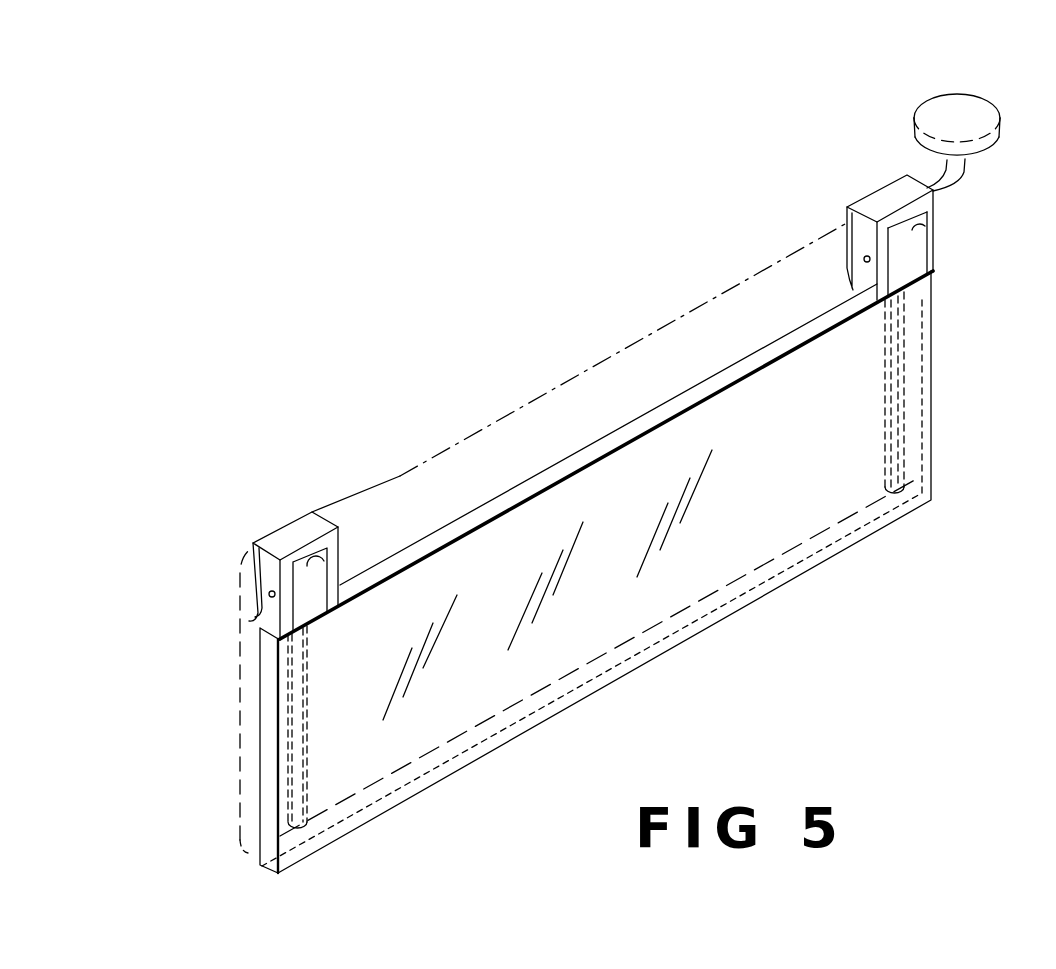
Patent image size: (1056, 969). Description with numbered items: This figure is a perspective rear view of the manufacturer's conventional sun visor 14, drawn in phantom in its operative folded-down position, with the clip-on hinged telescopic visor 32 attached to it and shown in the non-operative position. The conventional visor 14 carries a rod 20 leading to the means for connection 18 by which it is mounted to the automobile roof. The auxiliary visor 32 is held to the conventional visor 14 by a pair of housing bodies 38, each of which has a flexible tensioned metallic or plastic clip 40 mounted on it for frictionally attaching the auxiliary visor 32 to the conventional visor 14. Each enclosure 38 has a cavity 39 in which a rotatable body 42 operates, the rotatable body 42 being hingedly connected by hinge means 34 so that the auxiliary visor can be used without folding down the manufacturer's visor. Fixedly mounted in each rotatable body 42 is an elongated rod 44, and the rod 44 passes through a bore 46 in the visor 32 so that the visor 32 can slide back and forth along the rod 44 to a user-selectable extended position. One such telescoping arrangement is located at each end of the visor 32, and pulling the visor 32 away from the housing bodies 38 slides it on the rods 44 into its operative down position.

The visor 14 is at (252, 773).
The means for connection 18 is at (985, 117).
The rod 20 is at (952, 182).
The clip-on telescopic visor 32 is at (730, 570).
The hinge means 34 is at (867, 262).
The housing body 38 is at (920, 211).
The cavity 39 is at (921, 224).
The clip 40 is at (898, 227).
The rotatable body 42 is at (910, 262).
The rod 44 is at (903, 342).
The bore 46 is at (895, 465).